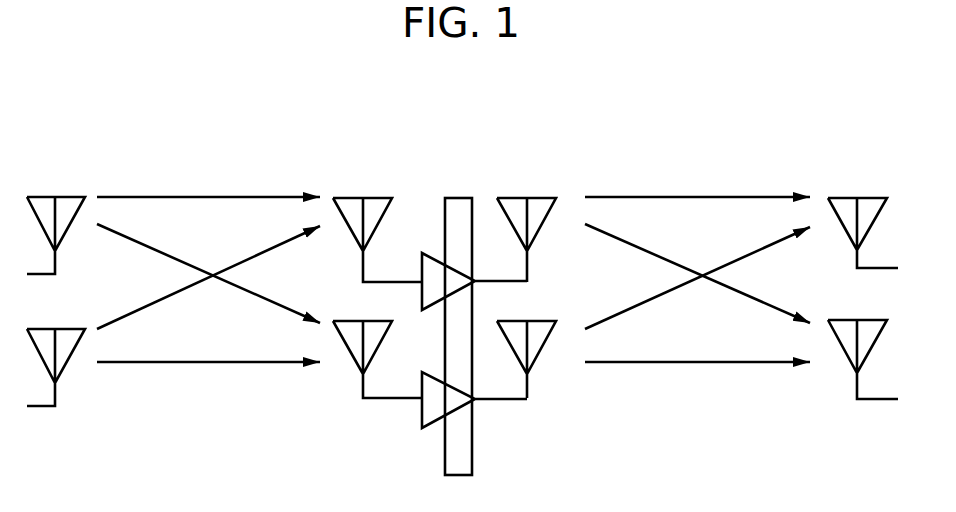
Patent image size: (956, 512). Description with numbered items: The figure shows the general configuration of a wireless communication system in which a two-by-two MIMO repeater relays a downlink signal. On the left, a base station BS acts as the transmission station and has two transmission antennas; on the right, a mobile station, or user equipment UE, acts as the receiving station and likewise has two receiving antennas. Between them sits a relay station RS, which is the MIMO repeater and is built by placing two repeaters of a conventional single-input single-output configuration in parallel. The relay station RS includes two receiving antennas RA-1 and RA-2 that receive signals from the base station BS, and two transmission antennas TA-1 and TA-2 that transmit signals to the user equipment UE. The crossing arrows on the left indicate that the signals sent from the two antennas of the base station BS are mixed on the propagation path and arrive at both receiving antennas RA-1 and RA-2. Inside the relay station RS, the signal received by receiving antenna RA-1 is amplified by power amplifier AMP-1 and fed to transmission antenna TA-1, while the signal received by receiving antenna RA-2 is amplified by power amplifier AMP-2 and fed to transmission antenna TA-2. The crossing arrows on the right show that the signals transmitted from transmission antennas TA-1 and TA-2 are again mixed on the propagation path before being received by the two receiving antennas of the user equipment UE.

The base station BS is at (56, 268).
The first receiving antenna RA-1 is at (334, 197).
The second receiving antenna RA-2 is at (363, 375).
The relay station RS is at (457, 300).
The first power amplifier AMP-1 is at (466, 288).
The second power amplifier AMP-2 is at (463, 407).
The first transmission antenna TA-1 is at (556, 197).
The second transmission antenna TA-2 is at (528, 374).
The user equipment UE is at (863, 265).